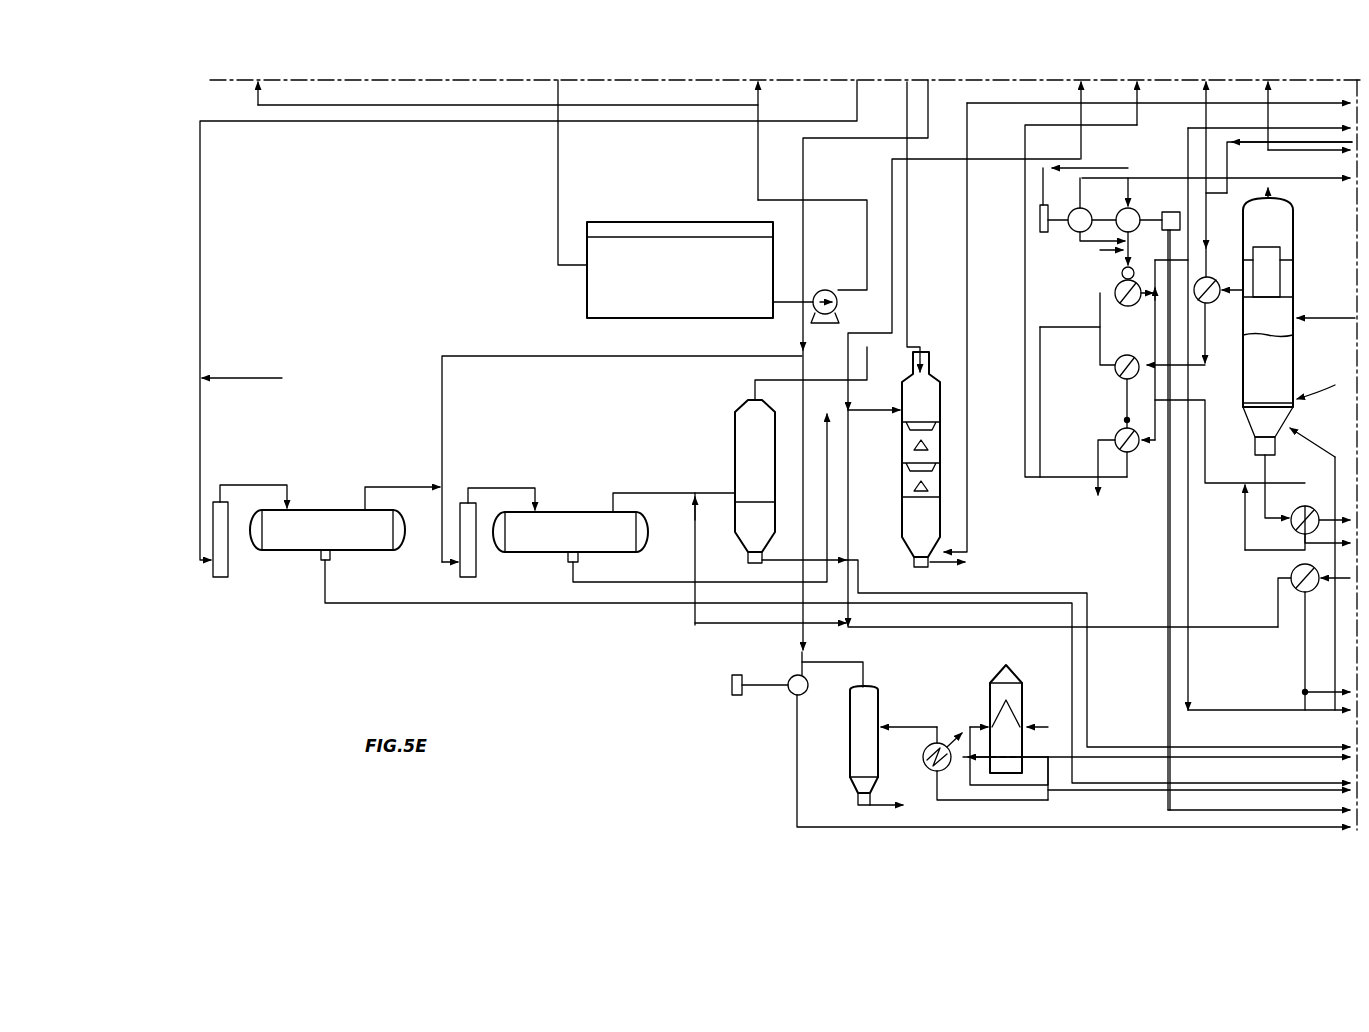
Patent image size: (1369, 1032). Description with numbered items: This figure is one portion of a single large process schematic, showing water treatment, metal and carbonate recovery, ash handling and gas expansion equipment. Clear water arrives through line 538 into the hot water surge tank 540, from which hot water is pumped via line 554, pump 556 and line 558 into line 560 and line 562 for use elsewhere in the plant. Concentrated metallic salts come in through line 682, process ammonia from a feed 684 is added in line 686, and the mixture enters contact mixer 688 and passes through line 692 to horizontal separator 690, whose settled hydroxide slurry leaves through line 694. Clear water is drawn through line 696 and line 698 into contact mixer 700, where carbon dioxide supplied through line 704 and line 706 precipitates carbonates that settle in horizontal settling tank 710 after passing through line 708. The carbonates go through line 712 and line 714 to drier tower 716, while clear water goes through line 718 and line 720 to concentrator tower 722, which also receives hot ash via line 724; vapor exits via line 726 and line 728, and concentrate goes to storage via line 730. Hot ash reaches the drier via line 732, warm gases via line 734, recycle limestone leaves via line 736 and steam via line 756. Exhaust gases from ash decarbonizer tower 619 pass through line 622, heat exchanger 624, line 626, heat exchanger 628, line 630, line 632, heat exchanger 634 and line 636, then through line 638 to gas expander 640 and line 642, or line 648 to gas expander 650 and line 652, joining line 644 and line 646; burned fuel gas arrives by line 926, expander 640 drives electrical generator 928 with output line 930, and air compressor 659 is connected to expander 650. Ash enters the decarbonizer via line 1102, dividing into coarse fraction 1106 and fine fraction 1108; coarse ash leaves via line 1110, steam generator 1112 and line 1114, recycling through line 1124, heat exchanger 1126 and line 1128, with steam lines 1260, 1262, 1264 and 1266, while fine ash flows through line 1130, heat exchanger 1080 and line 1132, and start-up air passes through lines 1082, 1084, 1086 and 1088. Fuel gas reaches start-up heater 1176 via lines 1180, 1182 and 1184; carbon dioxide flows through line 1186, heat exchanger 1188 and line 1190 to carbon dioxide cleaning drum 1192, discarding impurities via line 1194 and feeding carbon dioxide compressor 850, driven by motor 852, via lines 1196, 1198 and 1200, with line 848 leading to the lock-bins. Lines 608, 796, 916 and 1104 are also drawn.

The line 538 is at (560, 100).
The hot water surge tank 540 is at (587, 300).
The line 554 is at (786, 300).
The pump 556 is at (843, 306).
The line 558 is at (758, 122).
The line 560 is at (262, 97).
The line 562 is at (762, 97).
The line 608 is at (1206, 110).
The ash decarbonizer tower 619 is at (1316, 385).
The line 622 is at (1145, 125).
The heat exchanger 624 is at (1113, 437).
The line 626 is at (1140, 412).
The heat exchanger 628 is at (1094, 412).
The line 630 is at (1116, 372).
The line 632 is at (1207, 303).
The heat exchanger 634 is at (1112, 296).
The line 636 is at (1120, 272).
The line 638 is at (1102, 240).
The gas expander 640 is at (1100, 193).
The line 642 is at (1043, 196).
The line 644 is at (1260, 142).
The line 646 is at (1310, 195).
The line 648 is at (1095, 258).
The gas expander 650 is at (1070, 225).
The line 652 is at (1042, 207).
The air compressor 659 is at (1016, 234).
The line 682 is at (200, 360).
The feed 684 is at (240, 378).
The line 686 is at (200, 430).
The contact mixer 688 is at (228, 560).
The horizontal separator 690 is at (355, 508).
The line 692 is at (275, 485).
The line 694 is at (325, 598).
The line 696 is at (425, 484).
The line 698 is at (438, 548).
The contact mixer 700 is at (476, 565).
The line 704 is at (928, 125).
The line 706 is at (442, 450).
The line 708 is at (527, 490).
The horizontal settling tank 710 is at (605, 510).
The line 712 is at (575, 574).
The line 714 is at (885, 412).
The drier tower 716 is at (895, 478).
The line 718 is at (608, 478).
The line 720 is at (732, 498).
The concentrator tower 722 is at (735, 428).
The line 724 is at (692, 556).
The line 726 is at (752, 388).
The line 728 is at (907, 295).
The line 730 is at (1240, 746).
The line 732 is at (838, 553).
The line 734 is at (1100, 330).
The line 736 is at (967, 150).
The line 756 is at (925, 352).
The line 796 is at (1081, 115).
The line 848 is at (1172, 812).
The carbon dioxide compressor 850 is at (790, 693).
The motor 852 is at (740, 675).
The line 916 is at (1268, 112).
The line 926 is at (1355, 200).
The electrical generator 928 is at (1148, 499).
The line 930 is at (1190, 176).
The heat exchanger 1080 is at (1225, 285).
The line 1082 is at (1266, 430).
The line 1084 is at (1190, 385).
The line 1086 is at (1333, 708).
The line 1088 is at (1305, 692).
The line 1102 is at (1326, 312).
The line 1104 is at (1290, 553).
The coarse fraction 1106 is at (1293, 343).
The fine fraction 1108 is at (1293, 265).
The line 1110 is at (1275, 447).
The steam generator 1112 is at (1320, 509).
The line 1114 is at (1343, 440).
The line 1124 is at (1275, 605).
The heat exchanger 1126 is at (1296, 633).
The line 1128 is at (1278, 617).
The line 1130 is at (1243, 300).
The line 1132 is at (1186, 140).
The start-up heater 1176 is at (990, 690).
The line 1180 is at (1050, 785).
The line 1182 is at (1035, 627).
The line 1184 is at (1025, 752).
The line 1186 is at (935, 800).
The heat exchanger 1188 is at (925, 760).
The line 1190 is at (958, 716).
The carbon dioxide cleaning drum 1192 is at (900, 704).
The line 1194 is at (887, 809).
The line 1196 is at (863, 664).
The line 1198 is at (829, 679).
The line 1200 is at (803, 655).
The line 1260 is at (1261, 662).
The line 1262 is at (1250, 517).
The line 1264 is at (1265, 480).
The line 1266 is at (1300, 545).